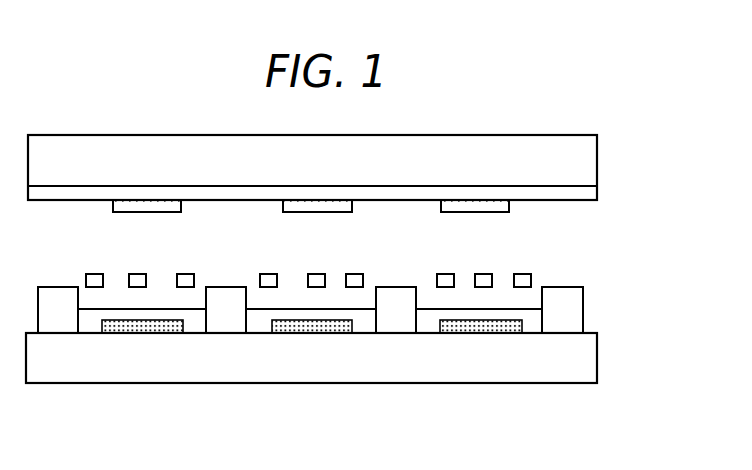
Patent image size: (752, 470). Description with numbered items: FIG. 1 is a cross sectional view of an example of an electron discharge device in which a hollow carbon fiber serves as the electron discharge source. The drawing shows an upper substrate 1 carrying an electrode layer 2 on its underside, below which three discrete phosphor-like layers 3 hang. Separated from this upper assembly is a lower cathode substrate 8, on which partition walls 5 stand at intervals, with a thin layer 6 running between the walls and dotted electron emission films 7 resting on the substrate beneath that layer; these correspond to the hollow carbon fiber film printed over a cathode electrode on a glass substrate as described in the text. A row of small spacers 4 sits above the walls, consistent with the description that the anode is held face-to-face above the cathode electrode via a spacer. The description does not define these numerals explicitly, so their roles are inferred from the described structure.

The first substrate 1 is at (532, 168).
The electrode layer 2 is at (535, 192).
The phosphor layer 3 is at (510, 206).
The spacer 4 is at (525, 272).
The partition wall 5 is at (565, 303).
The insulating layer 6 is at (530, 319).
The electron emission source 7 is at (488, 326).
The second substrate 8 is at (485, 365).